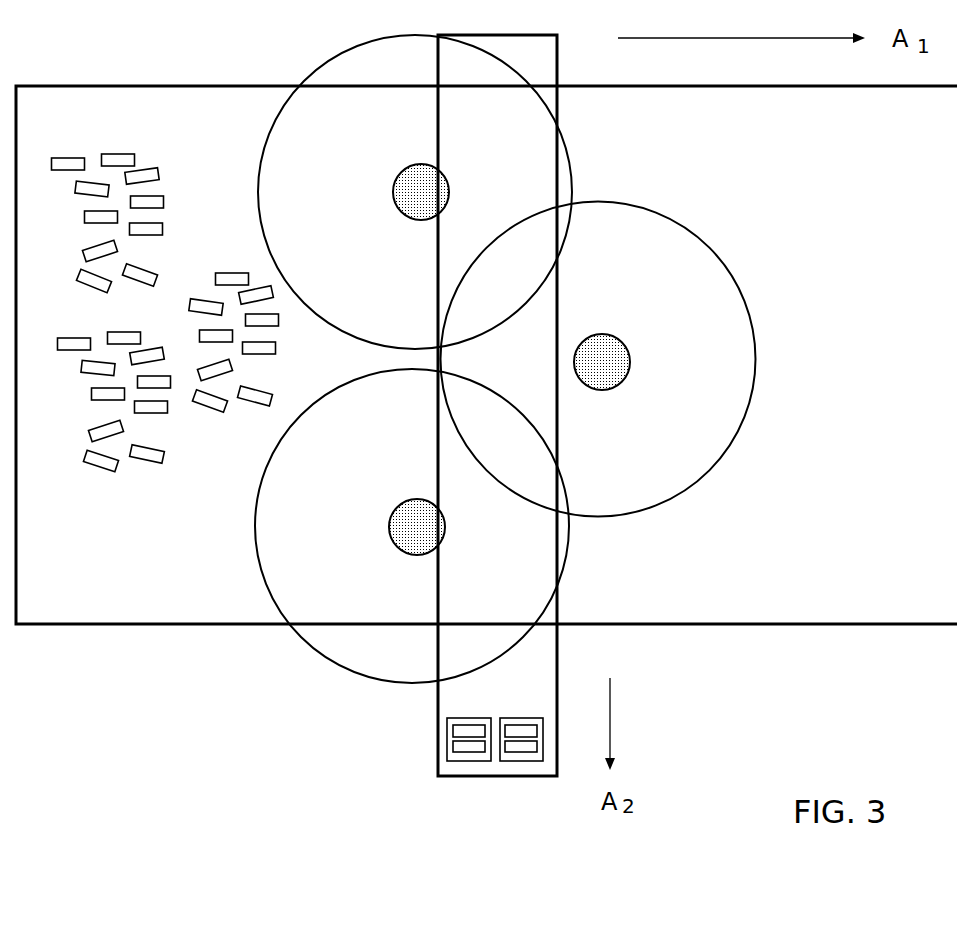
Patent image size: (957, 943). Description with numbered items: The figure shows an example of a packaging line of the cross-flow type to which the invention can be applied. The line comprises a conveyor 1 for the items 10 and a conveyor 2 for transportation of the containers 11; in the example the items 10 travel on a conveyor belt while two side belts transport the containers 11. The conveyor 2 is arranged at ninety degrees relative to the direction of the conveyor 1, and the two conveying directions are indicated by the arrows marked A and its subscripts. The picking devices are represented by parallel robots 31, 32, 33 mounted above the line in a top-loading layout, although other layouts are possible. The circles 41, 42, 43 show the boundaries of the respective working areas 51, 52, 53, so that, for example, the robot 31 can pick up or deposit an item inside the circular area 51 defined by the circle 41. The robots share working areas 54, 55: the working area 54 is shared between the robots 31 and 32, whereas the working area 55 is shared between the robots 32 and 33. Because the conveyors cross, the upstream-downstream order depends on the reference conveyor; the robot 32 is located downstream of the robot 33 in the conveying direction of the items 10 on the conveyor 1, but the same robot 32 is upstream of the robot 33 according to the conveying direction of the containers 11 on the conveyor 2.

The conveyor 1 is at (820, 608).
The conveyor 2 is at (447, 698).
The items 10 is at (143, 455).
The containers 11 is at (468, 756).
The parallel robot 31 is at (402, 172).
The parallel robot 32 is at (622, 333).
The parallel robot 33 is at (393, 543).
The circle 41 is at (325, 63).
The circle 42 is at (648, 212).
The circle 43 is at (257, 542).
The working area 51 is at (329, 241).
The working area 52 is at (668, 444).
The working area 53 is at (343, 492).
The shared working area 54 is at (514, 290).
The shared working area 55 is at (513, 457).